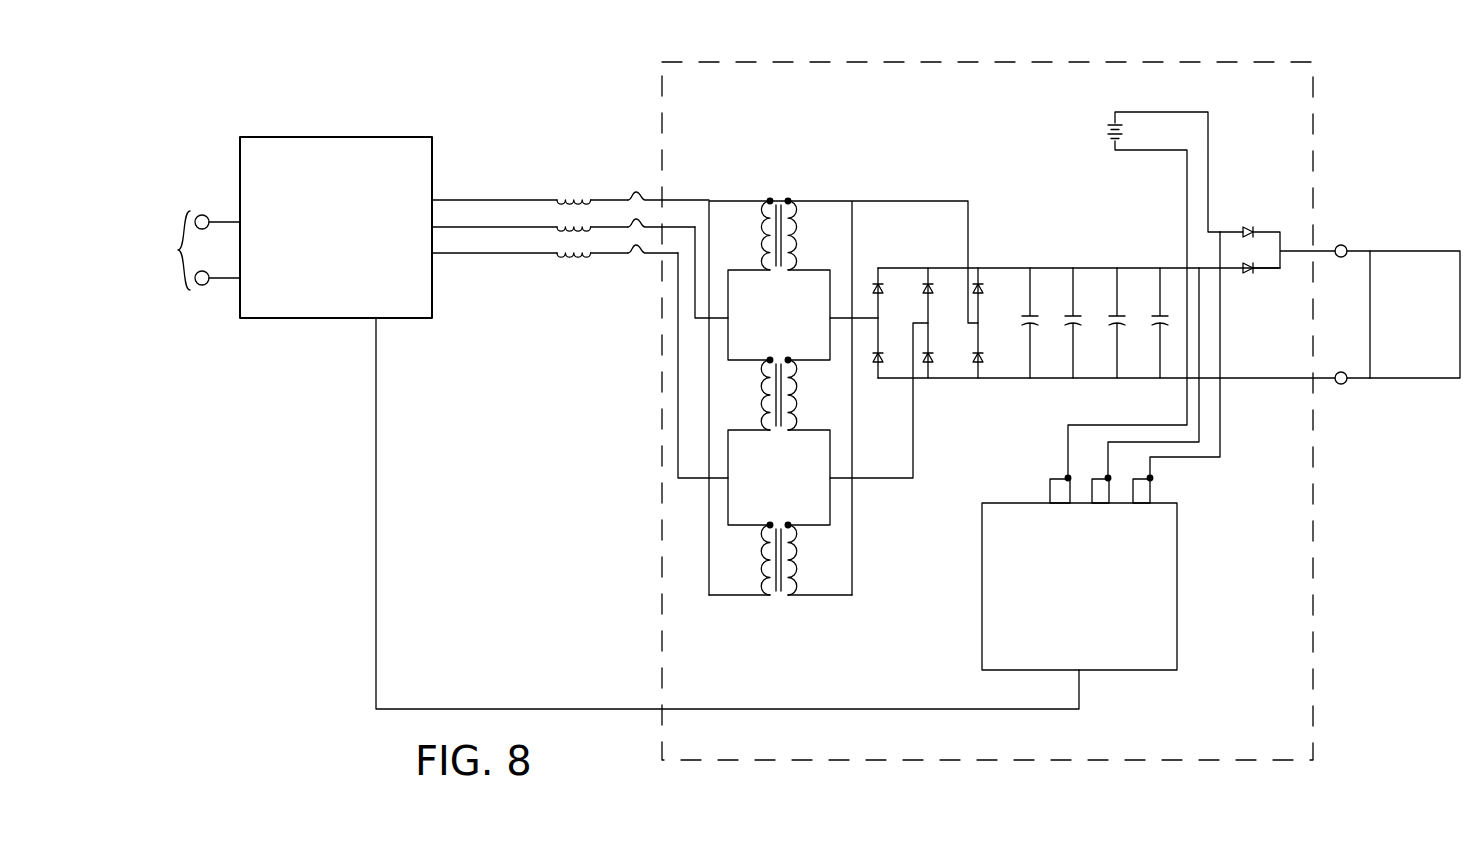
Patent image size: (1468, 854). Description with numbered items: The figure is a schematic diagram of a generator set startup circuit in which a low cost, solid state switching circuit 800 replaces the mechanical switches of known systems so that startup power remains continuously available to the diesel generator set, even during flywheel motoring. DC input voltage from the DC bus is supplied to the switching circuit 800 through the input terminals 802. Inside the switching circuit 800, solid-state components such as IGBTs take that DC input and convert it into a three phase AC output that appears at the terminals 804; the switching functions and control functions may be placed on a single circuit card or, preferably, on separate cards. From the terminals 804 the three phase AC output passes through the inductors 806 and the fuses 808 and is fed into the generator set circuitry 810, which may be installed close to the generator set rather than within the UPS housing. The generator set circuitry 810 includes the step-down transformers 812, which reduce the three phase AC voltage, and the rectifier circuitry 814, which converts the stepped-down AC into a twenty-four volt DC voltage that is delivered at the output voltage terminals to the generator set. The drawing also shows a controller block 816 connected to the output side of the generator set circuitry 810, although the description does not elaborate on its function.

The switching circuit 800 is at (398, 137).
The input terminals 802 is at (184, 250).
The terminals 804 is at (432, 200).
The inductors 806 is at (565, 190).
The fuses 808 is at (636, 185).
The GENSET circuitry 810 is at (972, 62).
The step-down transformers 812 is at (778, 183).
The rectifier circuitry 814 is at (977, 258).
The DSF controller 816 is at (1177, 524).